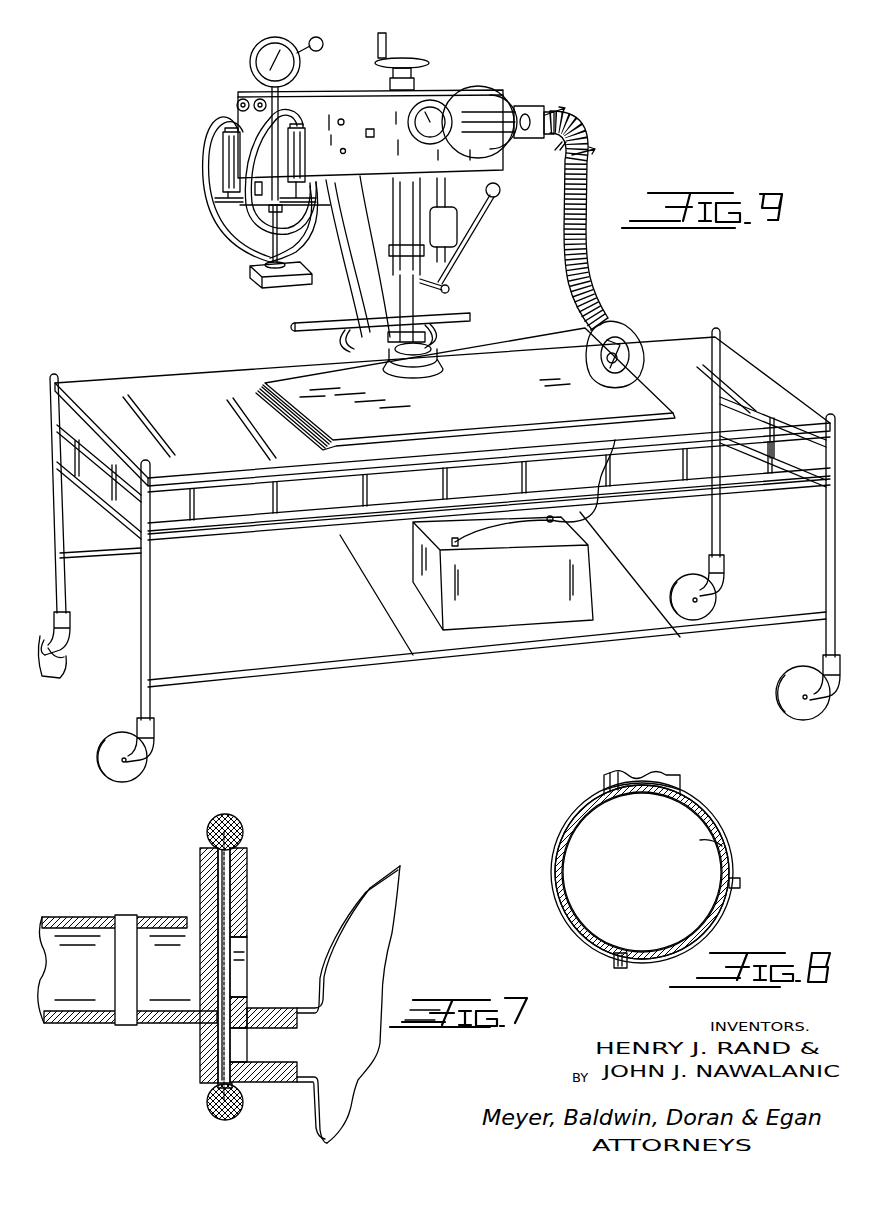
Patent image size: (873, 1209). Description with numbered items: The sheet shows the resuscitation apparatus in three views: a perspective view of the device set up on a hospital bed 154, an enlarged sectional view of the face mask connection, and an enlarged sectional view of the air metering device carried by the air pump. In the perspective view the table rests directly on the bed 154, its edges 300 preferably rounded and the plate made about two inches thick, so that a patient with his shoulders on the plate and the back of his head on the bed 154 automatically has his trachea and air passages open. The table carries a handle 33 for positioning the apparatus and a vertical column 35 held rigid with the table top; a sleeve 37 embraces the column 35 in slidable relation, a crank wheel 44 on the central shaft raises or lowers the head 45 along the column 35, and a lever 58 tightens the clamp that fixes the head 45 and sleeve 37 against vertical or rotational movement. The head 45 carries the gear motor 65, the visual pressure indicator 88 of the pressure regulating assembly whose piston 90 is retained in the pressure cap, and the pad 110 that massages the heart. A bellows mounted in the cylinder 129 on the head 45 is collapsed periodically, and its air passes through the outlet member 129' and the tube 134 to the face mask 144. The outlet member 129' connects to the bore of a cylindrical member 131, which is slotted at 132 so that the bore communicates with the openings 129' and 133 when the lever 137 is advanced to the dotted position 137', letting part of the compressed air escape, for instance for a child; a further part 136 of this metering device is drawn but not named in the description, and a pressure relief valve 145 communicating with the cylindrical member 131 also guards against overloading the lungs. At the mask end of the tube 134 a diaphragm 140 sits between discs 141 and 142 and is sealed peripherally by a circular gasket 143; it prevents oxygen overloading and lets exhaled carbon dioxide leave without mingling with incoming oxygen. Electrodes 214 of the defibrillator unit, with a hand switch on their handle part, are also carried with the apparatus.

In FIG. 9, the handle 33 is at (323, 323).
In FIG. 9, the vertical column 35 is at (448, 292).
In FIG. 9, the sleeve 37 is at (393, 201).
In FIG. 9, the crank wheel 44 is at (390, 62).
In FIG. 9, the head 45 is at (331, 101).
In FIG. 9, the lever 58 is at (488, 214).
In FIG. 9, the gear motor 65 is at (446, 196).
In FIG. 9, the visual pressure indicator 88 is at (277, 44).
In FIG. 9, the piston 90 is at (465, 389).
In FIG. 9, the pad 110 is at (252, 279).
In FIG. 9, the cylinder 129 is at (498, 113).
In FIG. 9, the outlet member 129' is at (534, 146).
In FIG. 8, the outlet member 129' is at (669, 774).
In FIG. 8, the cylindrical member 131 is at (701, 806).
In FIG. 8, the slot 132 is at (618, 797).
In FIG. 8, the opening 133 is at (578, 808).
In FIG. 9, the tube 134 is at (590, 273).
In FIG. 7, the tube 134 is at (78, 906).
In FIG. 8, the inner tube 136 is at (548, 868).
In FIG. 8, the lever 137 is at (602, 974).
In FIG. 8, the dotted position of lever 137' is at (759, 875).
In FIG. 7, the diaphragm 140 is at (230, 930).
In FIG. 7, the disc 141 is at (200, 872).
In FIG. 7, the disc 142 is at (245, 872).
In FIG. 7, the circular gasket 143 is at (242, 826).
In FIG. 9, the face mask 144 is at (615, 334).
In FIG. 7, the face mask 144 is at (357, 896).
In FIG. 9, the pressure relief valve 145 is at (551, 150).
In FIG. 9, the hospital bed 154 is at (148, 392).
In FIG. 9, the electrodes 214 is at (223, 157).
In FIG. 9, the edges 300 is at (291, 406).